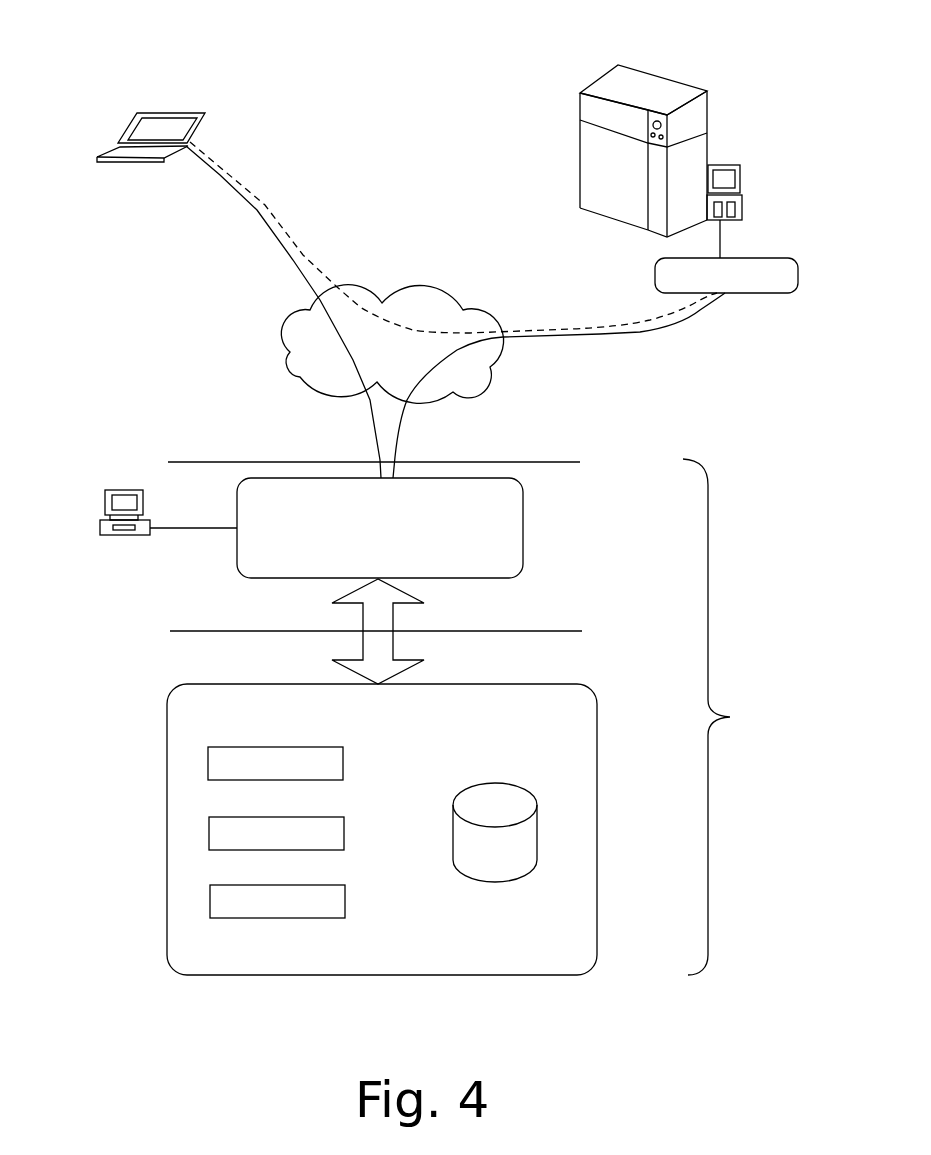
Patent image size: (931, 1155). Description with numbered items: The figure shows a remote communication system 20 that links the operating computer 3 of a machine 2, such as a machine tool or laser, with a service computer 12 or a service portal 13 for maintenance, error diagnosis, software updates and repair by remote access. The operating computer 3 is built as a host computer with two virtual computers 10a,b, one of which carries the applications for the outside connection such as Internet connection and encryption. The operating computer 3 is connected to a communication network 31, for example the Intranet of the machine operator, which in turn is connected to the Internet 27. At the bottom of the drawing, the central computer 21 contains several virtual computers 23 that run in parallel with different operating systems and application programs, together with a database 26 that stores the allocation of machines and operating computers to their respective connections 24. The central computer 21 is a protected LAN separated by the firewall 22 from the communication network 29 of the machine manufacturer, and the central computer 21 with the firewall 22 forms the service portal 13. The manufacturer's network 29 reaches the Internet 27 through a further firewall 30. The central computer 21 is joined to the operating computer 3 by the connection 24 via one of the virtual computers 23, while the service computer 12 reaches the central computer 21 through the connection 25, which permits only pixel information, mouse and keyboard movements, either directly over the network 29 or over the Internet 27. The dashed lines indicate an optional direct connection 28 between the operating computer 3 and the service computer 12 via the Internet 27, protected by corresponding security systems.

The machine 2 is at (657, 83).
The operating computer 3 is at (742, 193).
The virtual computers 10a,b is at (737, 208).
The service computer 12 is at (127, 132).
The service portal 13 is at (725, 717).
The system 20 is at (482, 111).
The central computer 21 is at (570, 765).
The firewall 22 is at (552, 628).
The virtual computers 23 is at (328, 765).
The connection 24 is at (663, 335).
The connection 25 is at (255, 193).
The database 26 is at (520, 845).
The communication network 27 is at (417, 310).
The direct connection 28 is at (567, 318).
The communication network 29 is at (513, 523).
The further firewall 30 is at (548, 461).
The communication network 31 is at (767, 278).